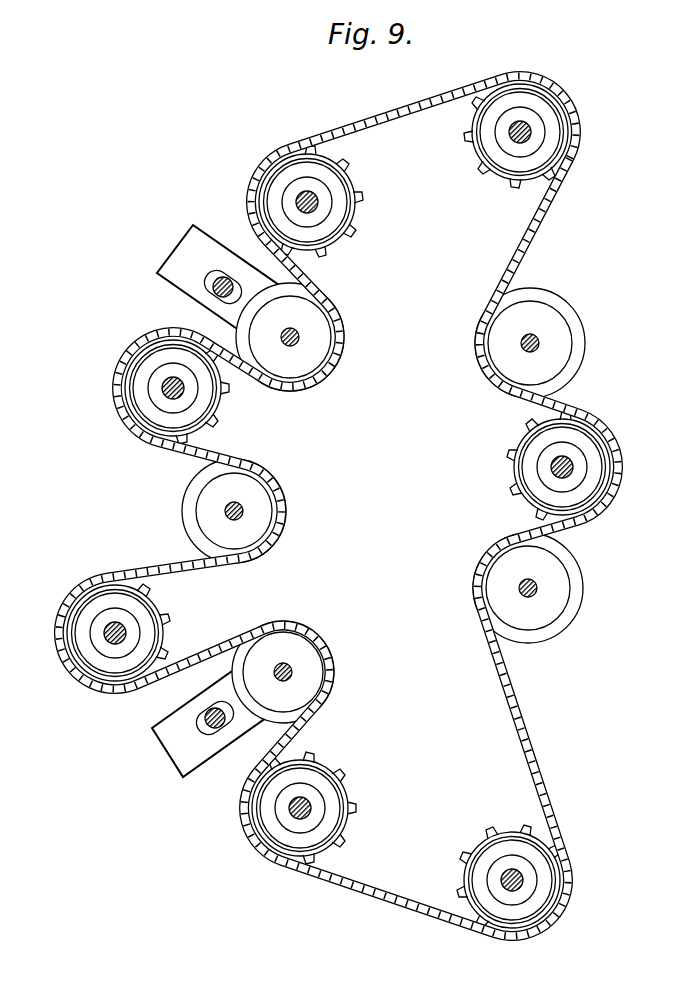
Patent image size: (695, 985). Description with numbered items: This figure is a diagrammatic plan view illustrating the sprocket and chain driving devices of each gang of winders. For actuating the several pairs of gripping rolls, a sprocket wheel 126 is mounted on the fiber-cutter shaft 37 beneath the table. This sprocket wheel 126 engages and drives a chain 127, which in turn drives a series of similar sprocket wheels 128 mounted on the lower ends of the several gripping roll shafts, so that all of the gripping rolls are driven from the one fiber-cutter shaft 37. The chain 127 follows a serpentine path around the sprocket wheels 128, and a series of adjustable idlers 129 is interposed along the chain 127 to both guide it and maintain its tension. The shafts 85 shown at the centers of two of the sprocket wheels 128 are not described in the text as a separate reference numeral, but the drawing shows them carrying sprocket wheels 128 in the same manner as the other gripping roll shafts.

The chain 127 is at (514, 716).
The sprocket wheels 128 is at (315, 506).
The adjustable idlers 129 is at (307, 362).
The shaft 85 is at (172, 389).
The sprocket wheel 126 is at (553, 465).
The fiber-cutter shaft 37 is at (574, 470).